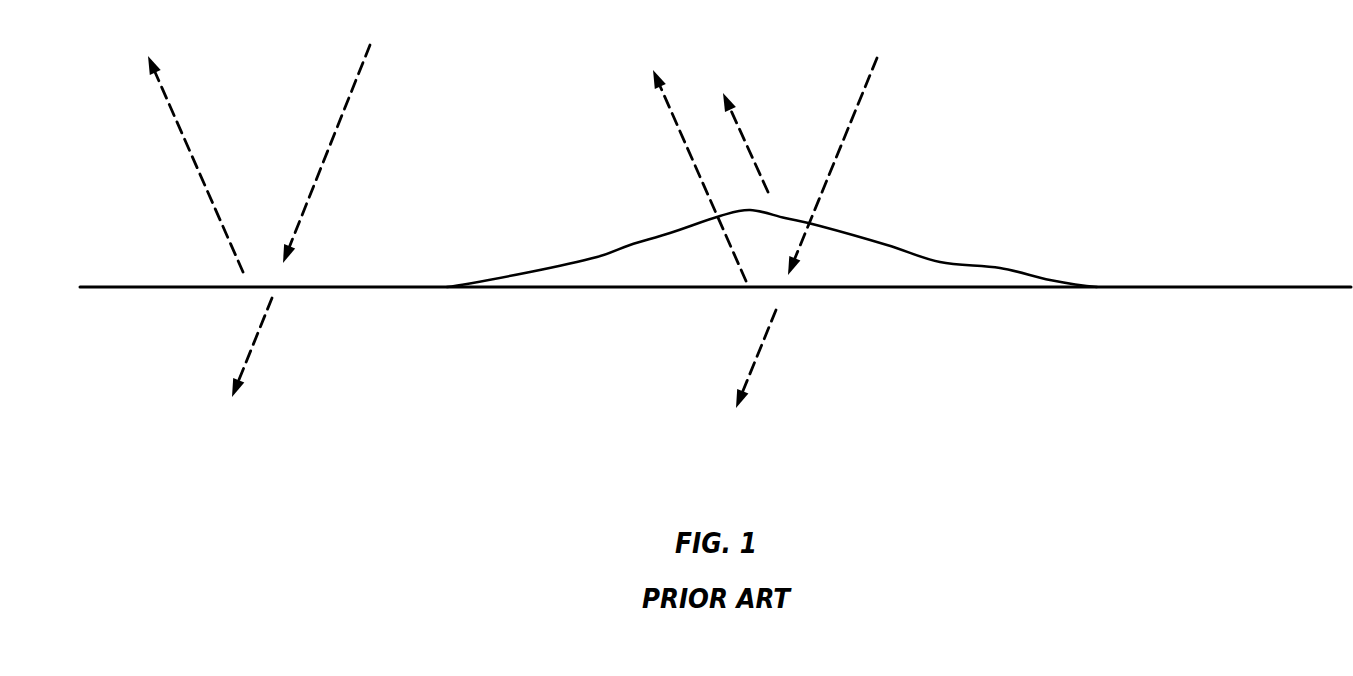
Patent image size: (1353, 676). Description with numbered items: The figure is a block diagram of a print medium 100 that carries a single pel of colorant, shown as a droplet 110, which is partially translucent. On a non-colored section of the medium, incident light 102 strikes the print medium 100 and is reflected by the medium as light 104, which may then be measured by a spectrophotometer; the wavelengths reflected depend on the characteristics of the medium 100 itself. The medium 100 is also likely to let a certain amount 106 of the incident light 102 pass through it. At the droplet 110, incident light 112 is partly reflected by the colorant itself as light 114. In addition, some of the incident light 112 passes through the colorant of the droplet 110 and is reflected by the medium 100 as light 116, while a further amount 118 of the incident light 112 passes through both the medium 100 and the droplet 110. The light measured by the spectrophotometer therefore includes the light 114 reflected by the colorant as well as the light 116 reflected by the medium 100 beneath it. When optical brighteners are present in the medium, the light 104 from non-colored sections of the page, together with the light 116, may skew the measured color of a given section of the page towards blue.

The print medium 100 is at (1252, 286).
The incident light 102 is at (353, 90).
The reflected light 104 is at (197, 167).
The transmitted light 106 is at (252, 343).
The droplet 110 is at (1008, 269).
The incident light 112 is at (853, 122).
The reflected light 114 is at (749, 143).
The reflected light 116 is at (692, 158).
The transmitted light 118 is at (758, 355).